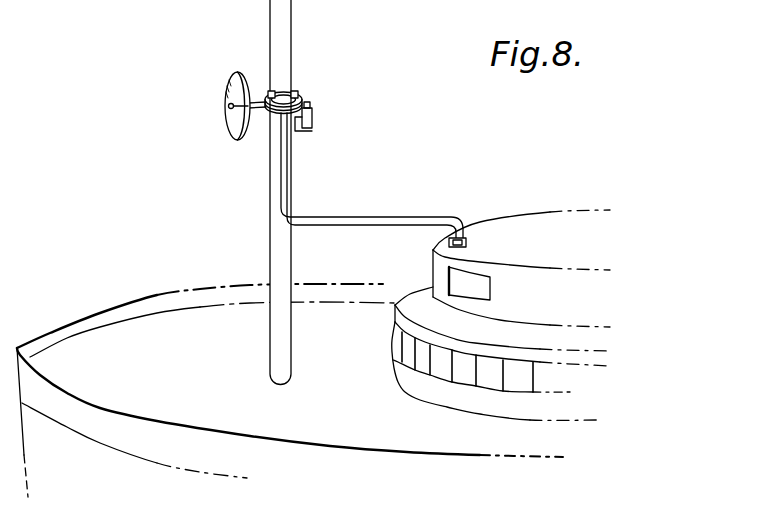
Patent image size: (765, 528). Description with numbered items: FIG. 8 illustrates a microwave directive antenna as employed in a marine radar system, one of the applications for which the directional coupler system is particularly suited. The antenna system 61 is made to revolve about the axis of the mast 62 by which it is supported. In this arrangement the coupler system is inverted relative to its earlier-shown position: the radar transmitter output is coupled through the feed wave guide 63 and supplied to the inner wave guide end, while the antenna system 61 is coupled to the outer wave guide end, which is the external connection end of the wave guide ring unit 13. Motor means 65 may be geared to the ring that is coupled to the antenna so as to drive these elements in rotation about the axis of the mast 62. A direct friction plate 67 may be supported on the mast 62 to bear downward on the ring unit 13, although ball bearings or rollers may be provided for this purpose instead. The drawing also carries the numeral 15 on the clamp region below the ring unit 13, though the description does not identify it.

The mast 62 is at (285, 25).
The feed wave guide 63 is at (377, 217).
The direct friction plate 67 is at (258, 101).
The antenna system 61 is at (229, 84).
The lower clamp band 15 is at (272, 116).
The wave guide ring unit 13 is at (294, 92).
The motor means 65 is at (313, 115).